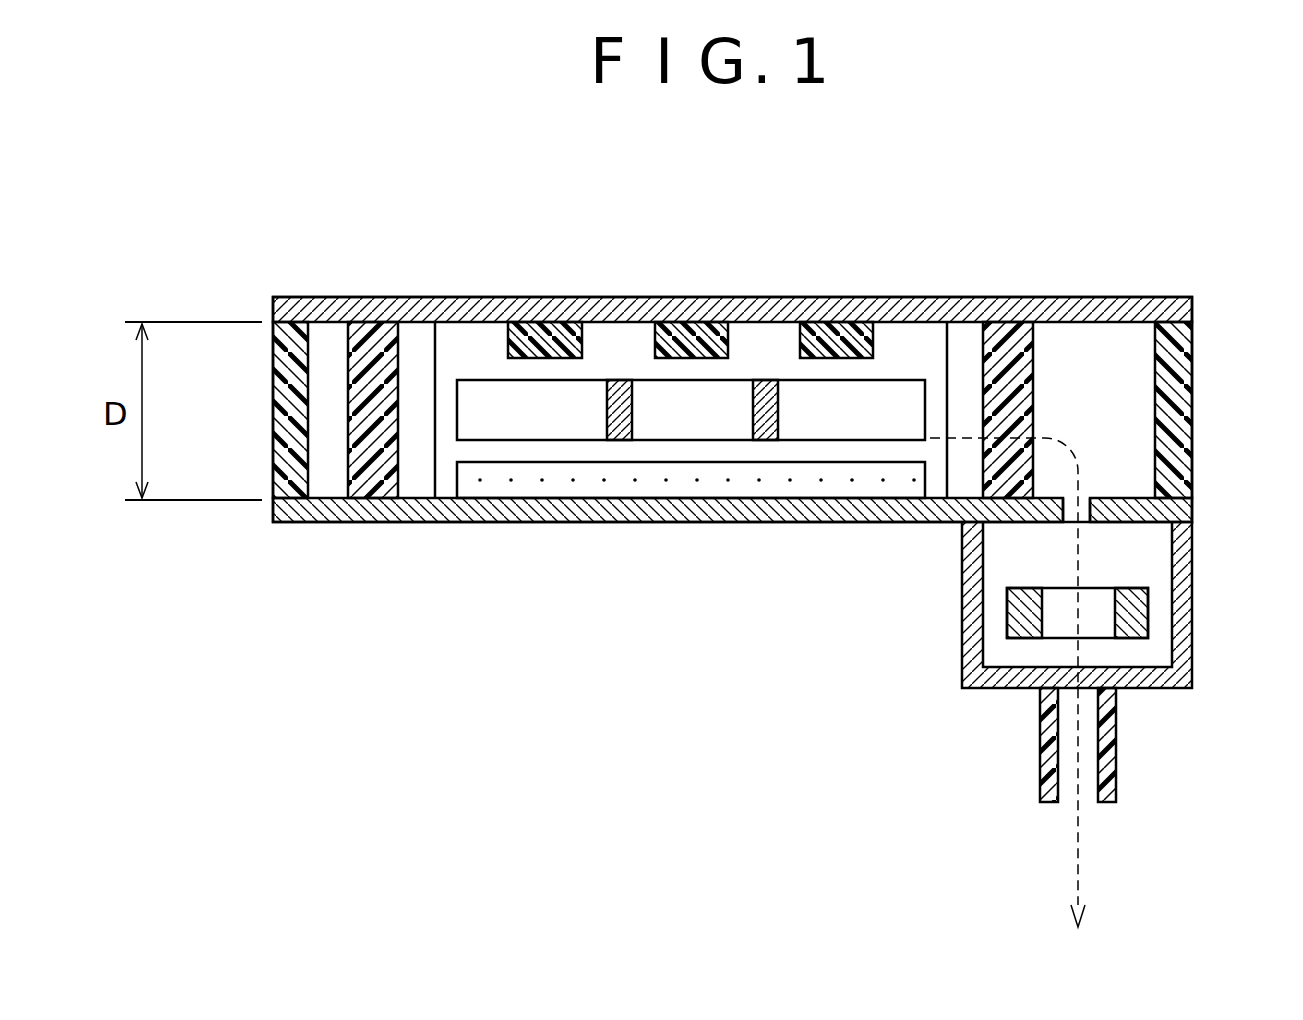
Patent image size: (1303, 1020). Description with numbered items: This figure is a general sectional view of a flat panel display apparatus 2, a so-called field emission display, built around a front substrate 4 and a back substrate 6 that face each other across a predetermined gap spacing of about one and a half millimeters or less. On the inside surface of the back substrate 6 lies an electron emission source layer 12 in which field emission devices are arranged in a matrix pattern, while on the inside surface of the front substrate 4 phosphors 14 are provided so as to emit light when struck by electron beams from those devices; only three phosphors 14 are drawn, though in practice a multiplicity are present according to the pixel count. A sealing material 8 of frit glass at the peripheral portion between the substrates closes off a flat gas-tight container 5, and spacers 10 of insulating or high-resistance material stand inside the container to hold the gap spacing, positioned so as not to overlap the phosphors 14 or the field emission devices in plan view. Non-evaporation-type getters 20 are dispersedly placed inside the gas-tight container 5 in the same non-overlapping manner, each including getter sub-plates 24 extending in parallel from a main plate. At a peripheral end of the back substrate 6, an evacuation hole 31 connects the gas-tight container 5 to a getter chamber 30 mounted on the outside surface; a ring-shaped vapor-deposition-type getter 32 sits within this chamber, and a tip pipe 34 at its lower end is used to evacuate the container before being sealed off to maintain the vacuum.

The flat panel display apparatus 2 is at (1133, 290).
The front substrate 4 is at (470, 297).
The gas-tight container 5 is at (620, 347).
The back substrate 6 is at (463, 507).
The sealing material 8 is at (277, 403).
The spacer 10 is at (380, 357).
The electron emission source layer 12 is at (700, 477).
The phosphor 14 is at (547, 340).
The non-evaporation-type getter 20 is at (545, 410).
The getter sub-plate 24 is at (623, 413).
The getter chamber 30 is at (1193, 653).
The evacuation hole 31 is at (1083, 508).
The vapor-deposition-type getter 32 is at (1148, 613).
The tip pipe 34 is at (1117, 747).